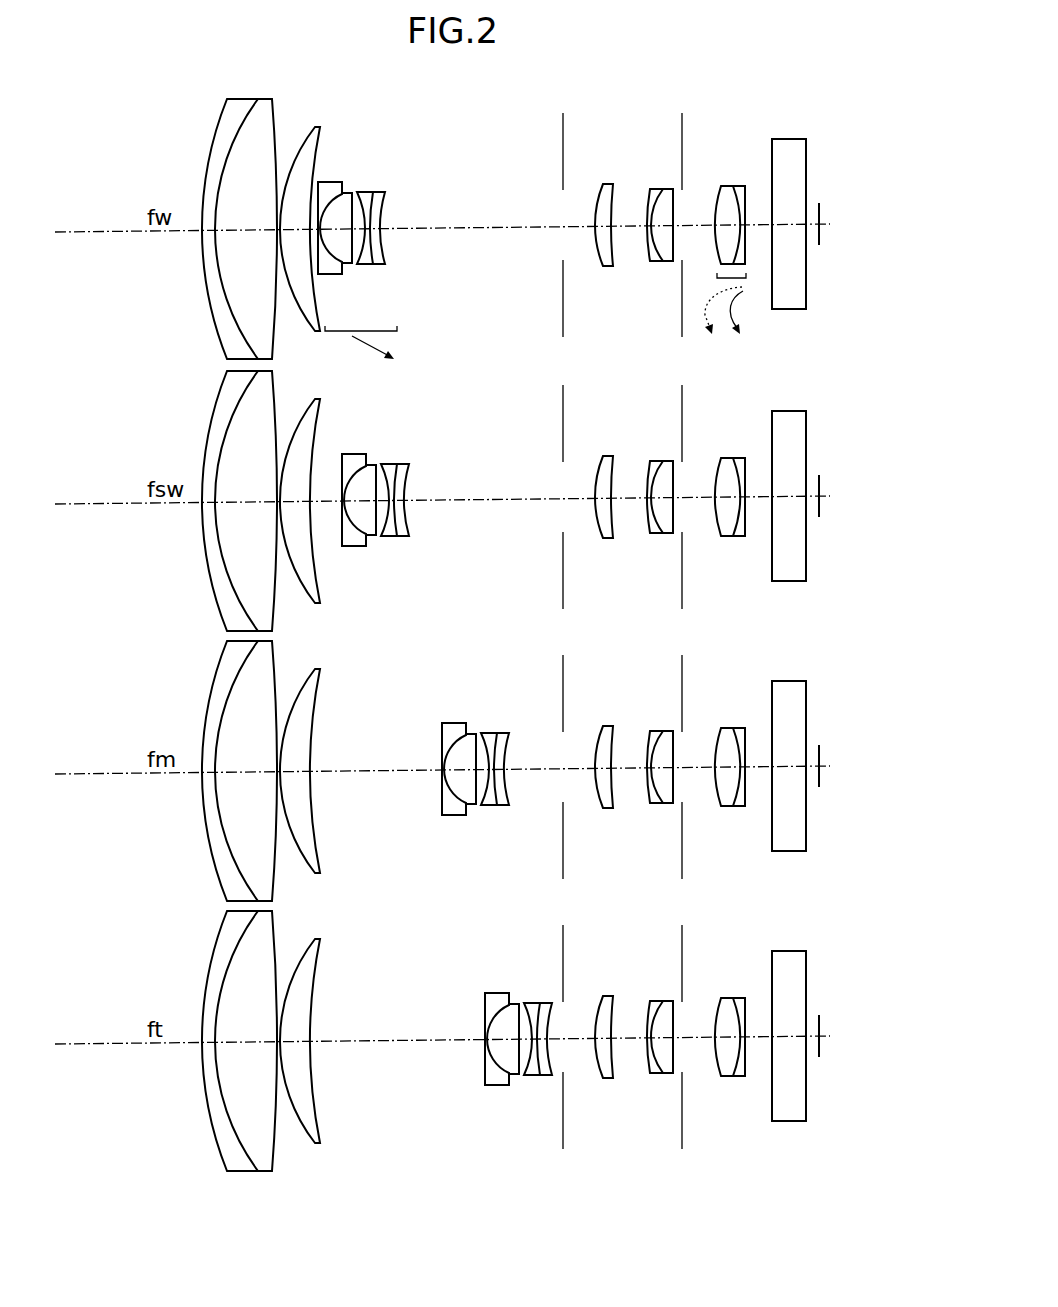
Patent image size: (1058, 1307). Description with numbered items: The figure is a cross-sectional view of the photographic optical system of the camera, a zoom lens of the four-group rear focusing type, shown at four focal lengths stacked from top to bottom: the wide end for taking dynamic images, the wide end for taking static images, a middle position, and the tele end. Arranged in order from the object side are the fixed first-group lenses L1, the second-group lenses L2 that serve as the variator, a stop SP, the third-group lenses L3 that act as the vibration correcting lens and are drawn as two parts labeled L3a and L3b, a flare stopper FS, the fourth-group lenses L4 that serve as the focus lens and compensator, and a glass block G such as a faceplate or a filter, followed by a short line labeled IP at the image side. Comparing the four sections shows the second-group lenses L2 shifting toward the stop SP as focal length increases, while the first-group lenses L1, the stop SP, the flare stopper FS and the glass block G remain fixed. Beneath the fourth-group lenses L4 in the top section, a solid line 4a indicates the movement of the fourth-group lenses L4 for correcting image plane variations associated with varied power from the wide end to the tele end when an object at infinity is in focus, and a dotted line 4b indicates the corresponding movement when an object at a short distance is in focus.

The first-group lenses L1 is at (225, 86).
The second-group lenses L2 is at (320, 168).
The third-group lenses L3 is at (675, 123).
The front sub lens unit of third lens unit L3a is at (621, 172).
The rear sub lens unit of third lens unit L3b is at (646, 172).
The fourth-group lenses L4 is at (746, 172).
The stop SP is at (563, 131).
The flare stopper FS is at (683, 122).
The glass block G is at (786, 142).
The image plane IP is at (820, 206).
The solid line 4a is at (738, 312).
The dotted line 4b is at (707, 323).